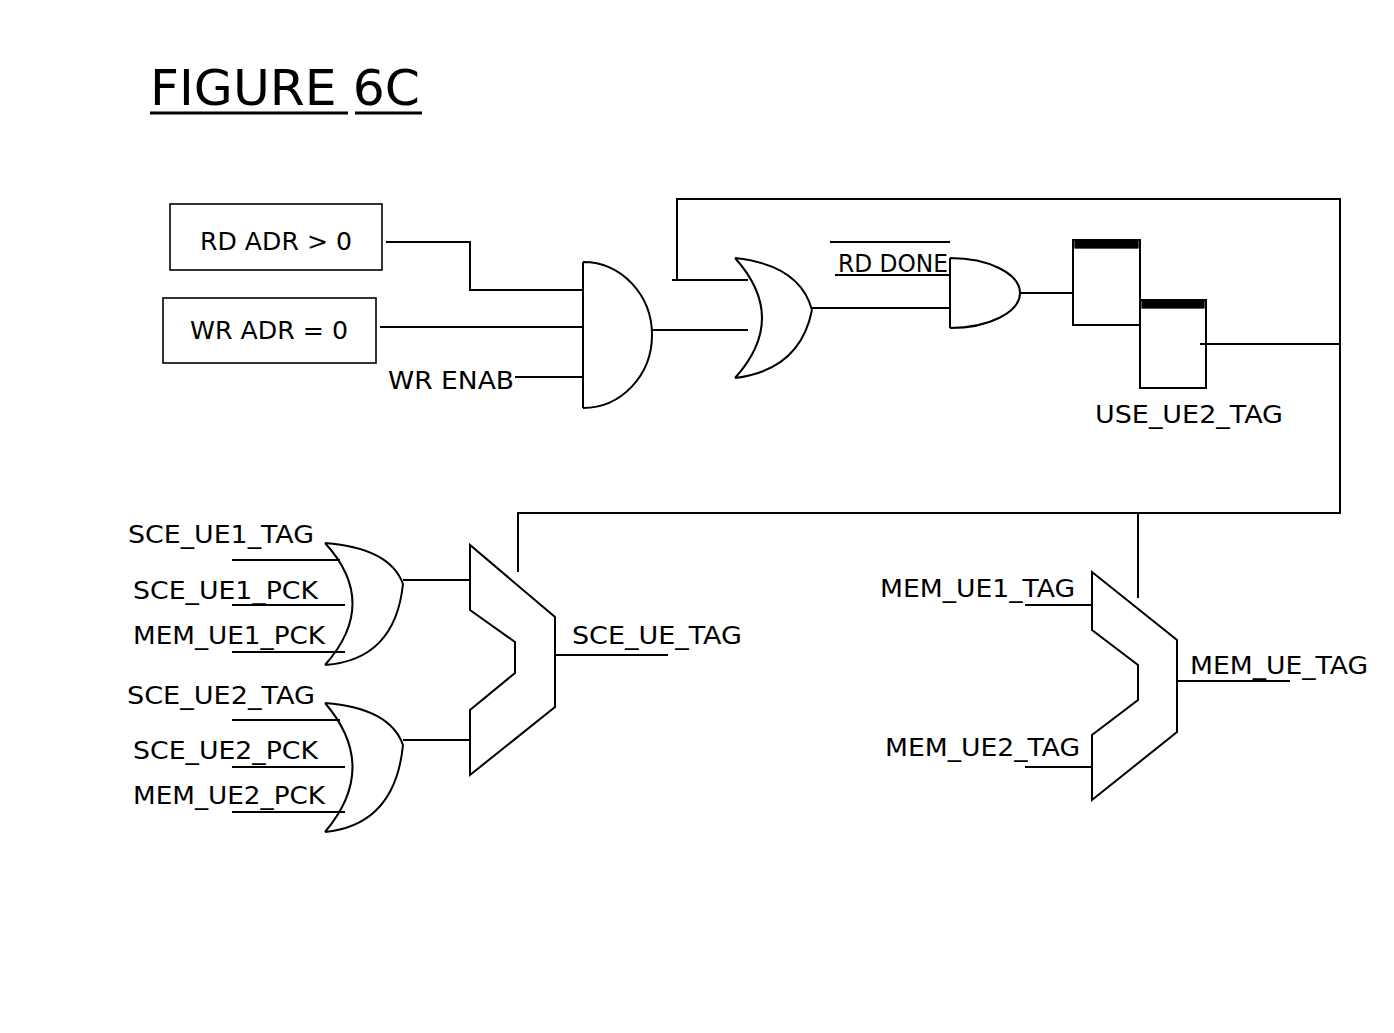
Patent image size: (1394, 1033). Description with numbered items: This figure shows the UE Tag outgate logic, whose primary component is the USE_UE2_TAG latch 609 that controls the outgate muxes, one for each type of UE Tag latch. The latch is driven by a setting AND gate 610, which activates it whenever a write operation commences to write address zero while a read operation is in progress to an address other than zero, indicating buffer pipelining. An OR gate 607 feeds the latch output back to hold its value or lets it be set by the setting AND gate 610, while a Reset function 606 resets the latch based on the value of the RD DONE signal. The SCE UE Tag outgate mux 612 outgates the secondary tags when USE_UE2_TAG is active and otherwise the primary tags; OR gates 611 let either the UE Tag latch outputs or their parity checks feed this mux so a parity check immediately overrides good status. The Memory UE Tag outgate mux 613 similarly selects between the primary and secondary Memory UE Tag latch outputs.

The Reset function 606 is at (965, 342).
The OR gate 607 is at (767, 388).
The USE_UE2_TAG latch 609 is at (1141, 280).
The setting AND gate 610 is at (632, 392).
The OR gates 611 is at (368, 833).
The SCE UE Tag outgate mux 612 is at (515, 733).
The Memory UE Tag outgate mux 613 is at (1138, 760).